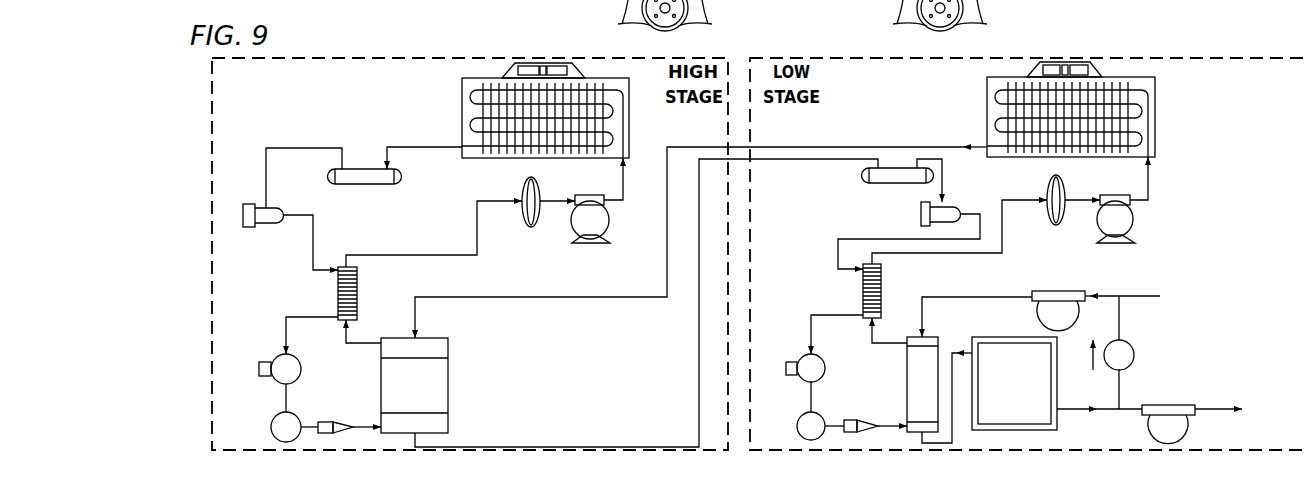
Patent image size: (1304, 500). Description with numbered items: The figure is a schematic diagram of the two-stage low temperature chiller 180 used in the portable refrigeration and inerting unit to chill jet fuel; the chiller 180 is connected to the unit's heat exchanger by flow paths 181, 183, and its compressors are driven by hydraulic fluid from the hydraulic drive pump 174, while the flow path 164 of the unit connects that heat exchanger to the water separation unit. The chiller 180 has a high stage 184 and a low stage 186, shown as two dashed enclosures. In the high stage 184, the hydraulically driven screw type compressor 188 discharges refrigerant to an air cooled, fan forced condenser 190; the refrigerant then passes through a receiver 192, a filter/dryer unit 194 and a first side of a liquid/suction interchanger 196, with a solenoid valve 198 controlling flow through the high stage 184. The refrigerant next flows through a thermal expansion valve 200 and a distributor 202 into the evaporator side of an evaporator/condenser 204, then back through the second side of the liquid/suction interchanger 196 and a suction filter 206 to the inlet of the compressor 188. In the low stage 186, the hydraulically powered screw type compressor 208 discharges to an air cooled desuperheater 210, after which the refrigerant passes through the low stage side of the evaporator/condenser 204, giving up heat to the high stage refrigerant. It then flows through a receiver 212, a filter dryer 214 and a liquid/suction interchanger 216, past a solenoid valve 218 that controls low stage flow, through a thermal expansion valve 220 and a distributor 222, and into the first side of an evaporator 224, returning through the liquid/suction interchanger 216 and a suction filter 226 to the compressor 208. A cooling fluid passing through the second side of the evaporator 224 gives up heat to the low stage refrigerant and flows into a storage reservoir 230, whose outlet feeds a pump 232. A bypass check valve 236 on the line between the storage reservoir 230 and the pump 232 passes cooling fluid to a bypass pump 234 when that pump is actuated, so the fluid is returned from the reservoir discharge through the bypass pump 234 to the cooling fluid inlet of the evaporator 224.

The flow path 164 is at (917, 15).
The hydraulic drive pump 174 is at (687, 15).
The low temperature chiller 180 is at (583, 42).
The flow path 181 is at (1213, 413).
The flow path 183 is at (1137, 296).
The high stage 184 is at (204, 115).
The low stage 186 is at (1229, 50).
The compressor 188 is at (605, 226).
The condenser 190 is at (502, 90).
The receiver 192 is at (352, 183).
The filter/dryer unit 194 is at (271, 218).
The liquid/suction interchanger 196 is at (338, 305).
The solenoid valve 198 is at (276, 355).
The thermal expansion valve 200 is at (273, 432).
The distributor 202 is at (337, 426).
The evaporator/condenser 204 is at (443, 397).
The suction filter 206 is at (523, 224).
The compressor 208 is at (1130, 222).
The air cooled desuperheater 210 is at (1102, 83).
The receiver 212 is at (873, 182).
The filter dryer 214 is at (923, 213).
The liquid/suction interchanger 216 is at (865, 298).
The solenoid valve 218 is at (800, 358).
The thermal expansion valve 220 is at (797, 427).
The distributor 222 is at (862, 425).
The evaporator 224 is at (913, 384).
The suction filter 226 is at (1047, 192).
The storage reservoir 230 is at (1031, 387).
The pump 232 is at (1163, 408).
The bypass pump 234 is at (1065, 295).
The bypass check valve 236 is at (1128, 341).